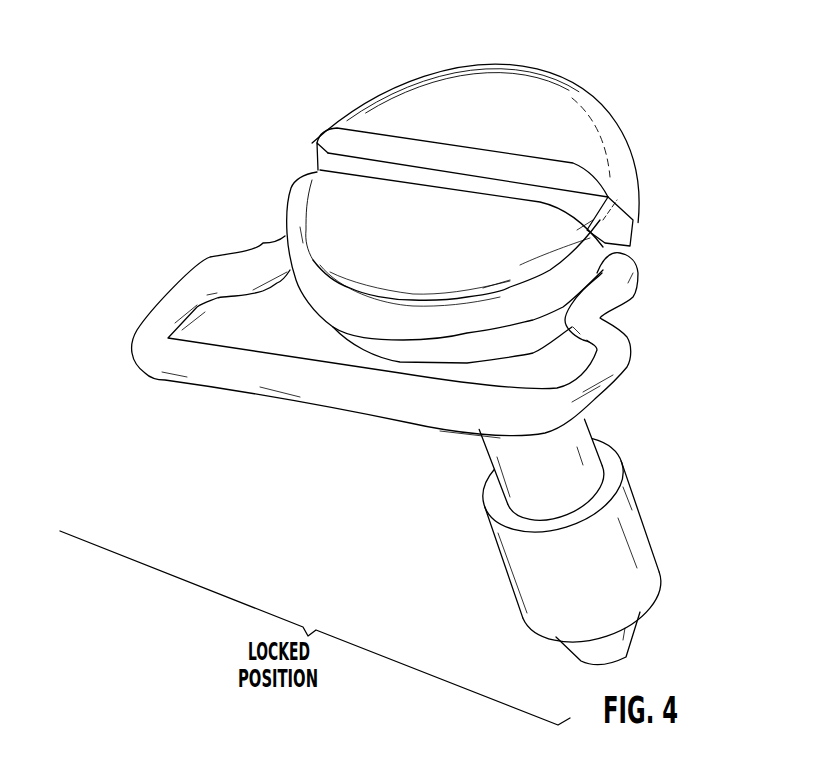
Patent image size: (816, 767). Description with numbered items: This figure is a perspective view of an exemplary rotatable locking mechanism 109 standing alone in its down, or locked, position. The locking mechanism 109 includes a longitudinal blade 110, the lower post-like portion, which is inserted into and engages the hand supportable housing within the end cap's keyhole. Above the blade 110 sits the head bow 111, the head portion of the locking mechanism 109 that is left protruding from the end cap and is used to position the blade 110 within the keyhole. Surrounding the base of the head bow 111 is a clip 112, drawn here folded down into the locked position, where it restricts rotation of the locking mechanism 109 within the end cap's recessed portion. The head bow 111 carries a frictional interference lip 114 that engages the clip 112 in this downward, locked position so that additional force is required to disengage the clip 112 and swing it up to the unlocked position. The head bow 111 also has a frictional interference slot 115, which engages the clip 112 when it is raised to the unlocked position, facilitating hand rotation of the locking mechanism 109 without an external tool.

The locking mechanism 109 is at (230, 129).
The longitudinal blade 110 is at (464, 470).
The head bow 111 is at (573, 113).
The clip 112 is at (218, 367).
The frictional interference lip 114 is at (630, 248).
The frictional interference slot 115 is at (443, 170).